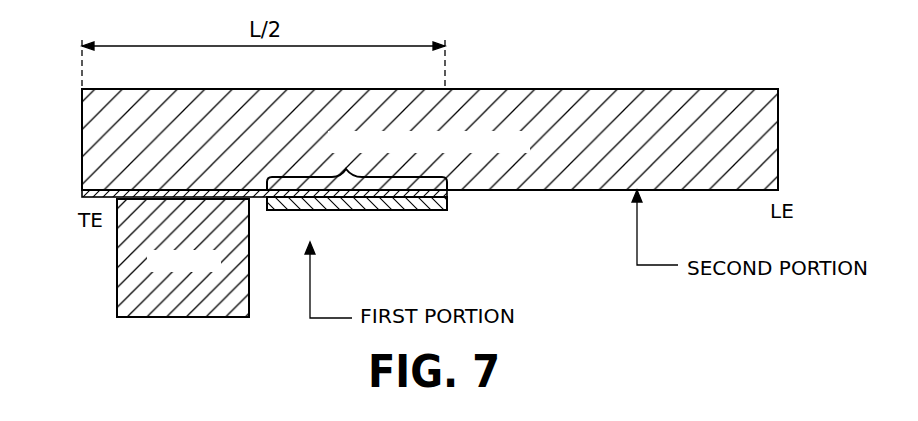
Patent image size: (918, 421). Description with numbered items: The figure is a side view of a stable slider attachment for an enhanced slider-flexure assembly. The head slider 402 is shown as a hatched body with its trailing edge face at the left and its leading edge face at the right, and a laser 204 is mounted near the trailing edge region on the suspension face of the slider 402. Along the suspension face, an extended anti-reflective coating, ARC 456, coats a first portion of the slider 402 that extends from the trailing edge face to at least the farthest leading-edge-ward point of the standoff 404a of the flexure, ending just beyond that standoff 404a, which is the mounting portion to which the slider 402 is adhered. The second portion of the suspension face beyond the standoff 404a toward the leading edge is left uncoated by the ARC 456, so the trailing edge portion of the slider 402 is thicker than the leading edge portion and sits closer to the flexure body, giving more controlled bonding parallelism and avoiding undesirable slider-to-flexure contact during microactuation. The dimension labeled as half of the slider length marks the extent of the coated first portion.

The head slider 402 is at (727, 105).
The ARC 456 is at (80, 193).
The standoff 404a is at (406, 203).
The laser 204 is at (182, 307).